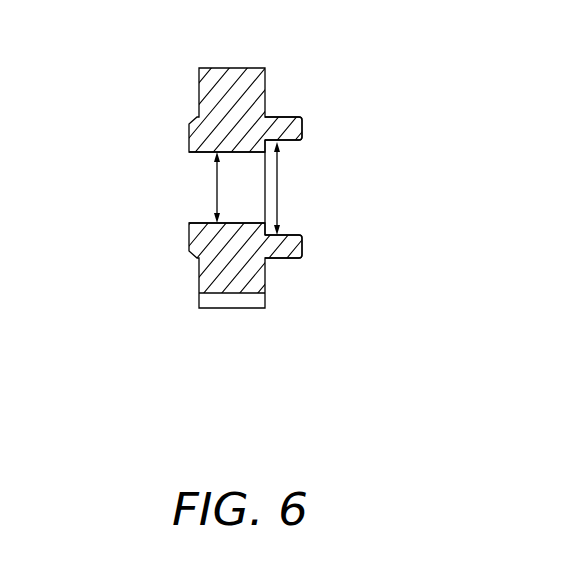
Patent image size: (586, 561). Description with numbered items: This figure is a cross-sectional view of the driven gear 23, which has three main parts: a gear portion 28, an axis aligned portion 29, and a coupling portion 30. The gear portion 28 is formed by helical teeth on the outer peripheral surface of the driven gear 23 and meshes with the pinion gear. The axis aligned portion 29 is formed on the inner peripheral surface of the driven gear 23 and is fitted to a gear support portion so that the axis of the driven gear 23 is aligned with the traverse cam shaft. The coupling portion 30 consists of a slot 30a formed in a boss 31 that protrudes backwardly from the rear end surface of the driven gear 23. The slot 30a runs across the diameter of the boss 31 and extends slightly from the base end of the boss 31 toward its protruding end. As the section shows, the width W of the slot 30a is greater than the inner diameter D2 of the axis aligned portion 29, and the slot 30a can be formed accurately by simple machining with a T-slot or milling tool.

The driven gear 23 is at (312, 85).
The gear portion 28 is at (238, 308).
The axis aligned portion 29 is at (217, 153).
The coupling portion 30 is at (295, 220).
The slot 30a is at (268, 150).
The boss 31 is at (282, 258).